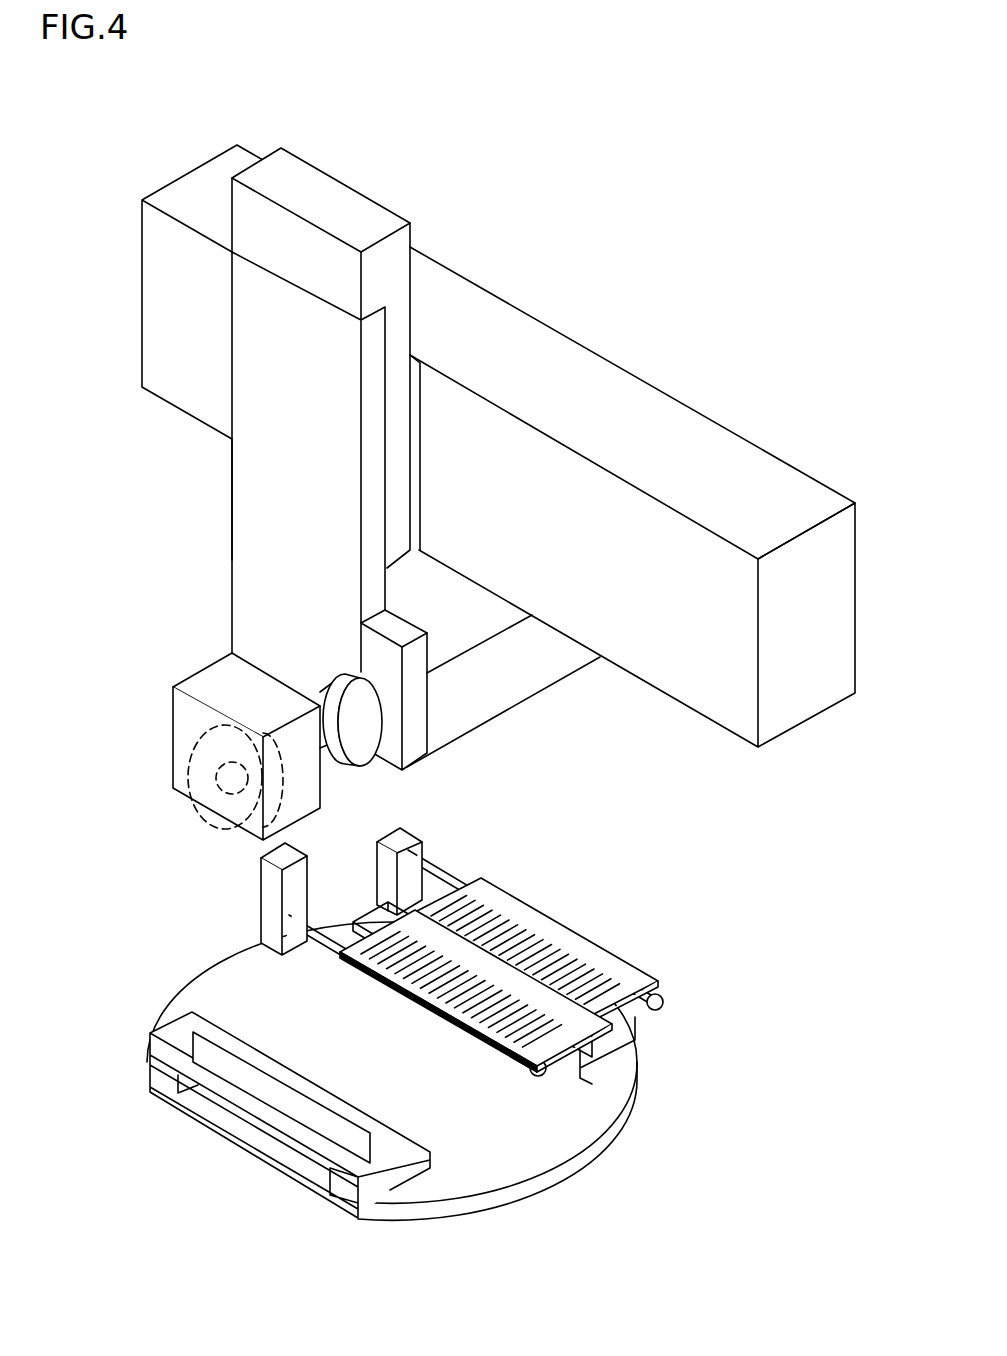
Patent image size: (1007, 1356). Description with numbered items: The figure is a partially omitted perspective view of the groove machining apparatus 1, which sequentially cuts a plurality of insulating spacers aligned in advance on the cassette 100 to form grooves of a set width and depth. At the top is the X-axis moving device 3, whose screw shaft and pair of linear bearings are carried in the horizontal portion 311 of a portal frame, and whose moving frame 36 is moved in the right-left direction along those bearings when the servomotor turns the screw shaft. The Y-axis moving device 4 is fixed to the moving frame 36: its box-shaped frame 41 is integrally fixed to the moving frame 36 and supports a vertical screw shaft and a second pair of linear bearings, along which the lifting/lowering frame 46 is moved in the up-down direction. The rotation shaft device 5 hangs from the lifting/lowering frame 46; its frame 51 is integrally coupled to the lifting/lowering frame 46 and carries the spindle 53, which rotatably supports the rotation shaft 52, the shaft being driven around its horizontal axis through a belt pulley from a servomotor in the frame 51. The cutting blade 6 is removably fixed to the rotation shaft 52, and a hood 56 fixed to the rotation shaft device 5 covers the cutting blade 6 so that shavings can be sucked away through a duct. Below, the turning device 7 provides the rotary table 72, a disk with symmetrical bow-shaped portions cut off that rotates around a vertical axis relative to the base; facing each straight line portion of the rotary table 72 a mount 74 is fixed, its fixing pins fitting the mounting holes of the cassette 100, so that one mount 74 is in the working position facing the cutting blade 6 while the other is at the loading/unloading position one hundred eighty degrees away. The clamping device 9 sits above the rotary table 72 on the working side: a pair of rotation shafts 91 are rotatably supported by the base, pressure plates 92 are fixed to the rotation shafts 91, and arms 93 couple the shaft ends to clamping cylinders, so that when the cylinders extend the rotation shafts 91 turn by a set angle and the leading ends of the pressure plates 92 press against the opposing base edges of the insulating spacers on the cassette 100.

The groove machining apparatus 1 is at (89, 119).
The X-axis moving device 3 is at (627, 350).
The horizontal portion 311 is at (747, 478).
The moving frame 36 is at (417, 390).
The Y-axis moving device 4 is at (271, 385).
The box-shaped frame 41 is at (337, 198).
The lifting/lowering frame 46 is at (243, 562).
The rotation shaft device 5 is at (499, 702).
The frame 51 is at (470, 712).
The rotation shaft 52 is at (332, 718).
The spindle 53 is at (368, 728).
The hood 56 is at (195, 739).
The cutting blade 6 is at (187, 770).
The turning device 7 is at (394, 1071).
The rotary table 72 is at (215, 968).
The mount 74 is at (340, 1187).
The clamping device 9 is at (472, 1039).
The rotation shaft 91 is at (662, 1003).
The pressure plate 92 is at (550, 932).
The arm 93 is at (268, 883).
The cassette 100 is at (309, 1069).